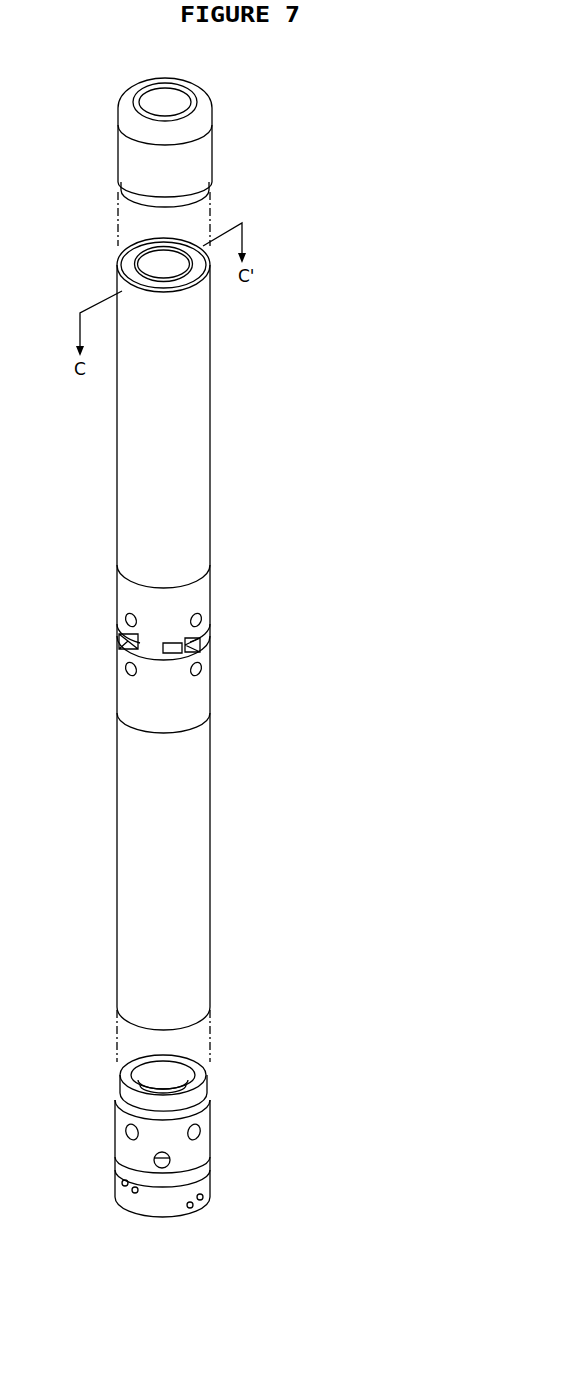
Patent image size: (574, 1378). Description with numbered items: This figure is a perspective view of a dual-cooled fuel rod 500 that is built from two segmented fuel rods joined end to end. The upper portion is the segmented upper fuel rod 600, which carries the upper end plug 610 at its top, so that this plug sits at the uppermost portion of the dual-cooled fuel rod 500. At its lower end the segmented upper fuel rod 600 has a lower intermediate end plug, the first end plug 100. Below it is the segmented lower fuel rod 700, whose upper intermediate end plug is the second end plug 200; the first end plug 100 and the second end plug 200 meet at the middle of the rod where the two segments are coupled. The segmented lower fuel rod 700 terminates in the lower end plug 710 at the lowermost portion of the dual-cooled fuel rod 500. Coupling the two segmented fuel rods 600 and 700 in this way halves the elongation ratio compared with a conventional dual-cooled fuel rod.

The dual-cooled fuel rod 500 is at (242, 647).
The upper end plug 610 is at (205, 155).
The segmented upper fuel rod 600 is at (248, 395).
The first end plug 100 is at (226, 605).
The second end plug 200 is at (219, 685).
The segmented lower fuel rod 700 is at (239, 882).
The lower end plug 710 is at (205, 1138).